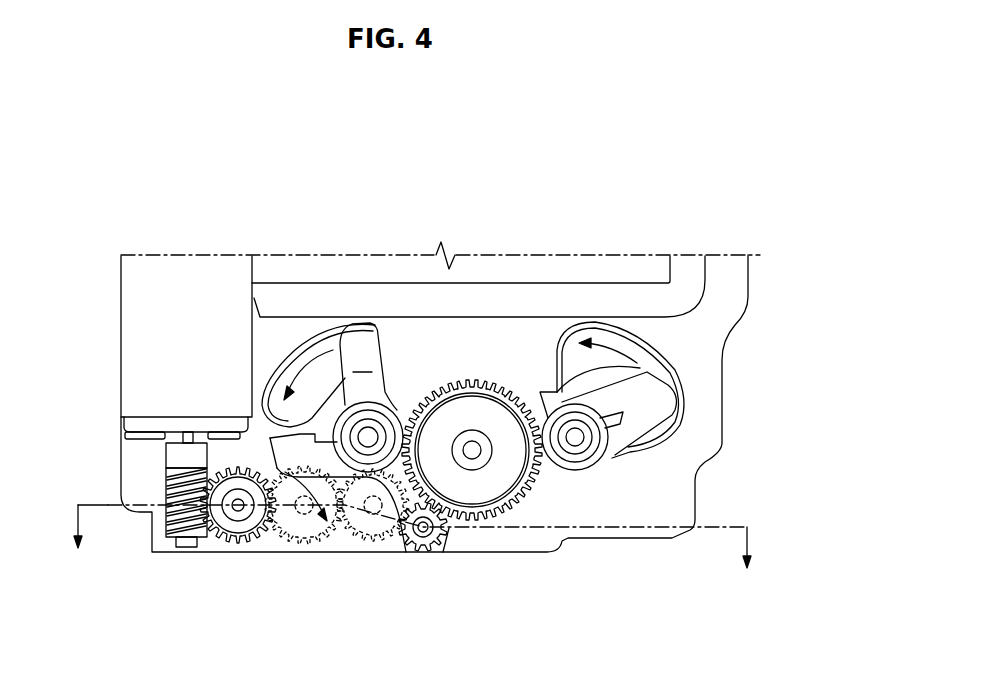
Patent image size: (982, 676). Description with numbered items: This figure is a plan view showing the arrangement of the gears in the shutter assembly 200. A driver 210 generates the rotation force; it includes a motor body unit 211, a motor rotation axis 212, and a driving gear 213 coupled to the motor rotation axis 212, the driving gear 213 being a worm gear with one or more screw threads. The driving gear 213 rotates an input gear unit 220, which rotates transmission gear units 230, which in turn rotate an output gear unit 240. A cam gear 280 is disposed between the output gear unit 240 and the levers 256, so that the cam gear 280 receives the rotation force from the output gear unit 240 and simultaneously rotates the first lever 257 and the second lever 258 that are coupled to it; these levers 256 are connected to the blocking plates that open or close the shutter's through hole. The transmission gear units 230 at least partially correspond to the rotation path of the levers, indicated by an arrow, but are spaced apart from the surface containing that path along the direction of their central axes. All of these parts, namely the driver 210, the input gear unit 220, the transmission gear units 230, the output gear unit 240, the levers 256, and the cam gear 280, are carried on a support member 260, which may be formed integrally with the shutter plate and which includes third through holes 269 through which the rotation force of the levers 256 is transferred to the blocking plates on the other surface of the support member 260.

The shutter assembly 200 is at (580, 203).
The driver 210 is at (63, 380).
The motor body unit 211 is at (135, 385).
The motor rotation axis 212 is at (182, 432).
The driving gear 213 is at (167, 488).
The input gear unit 220 is at (226, 546).
The transmission gear units 230 is at (365, 542).
The output gear unit 240 is at (425, 556).
The levers 256 is at (372, 201).
The first lever 257 is at (600, 400).
The second lever 258 is at (362, 342).
The support member 260 is at (685, 457).
The third through holes 269 is at (320, 350).
The cam gear 280 is at (483, 492).